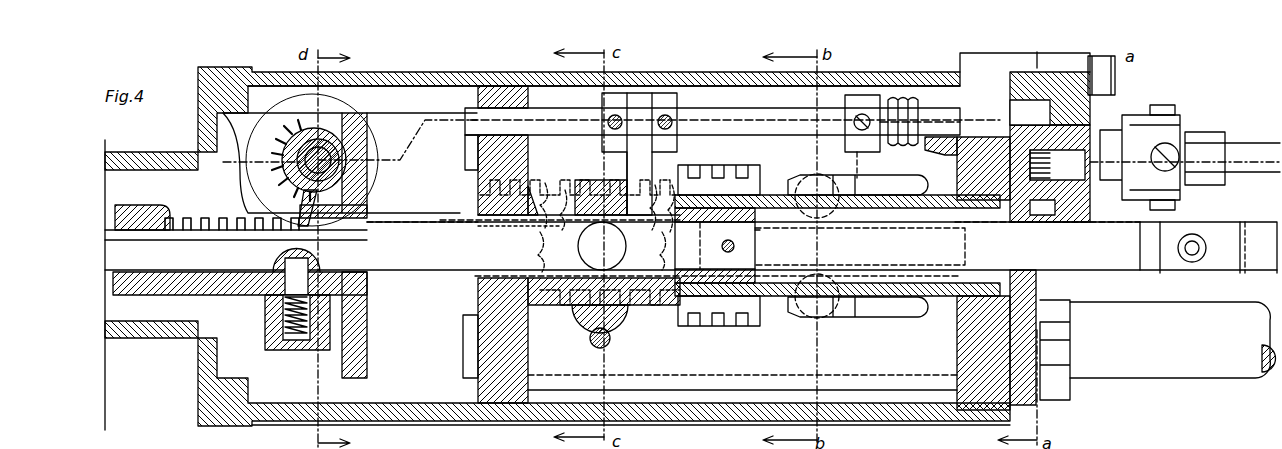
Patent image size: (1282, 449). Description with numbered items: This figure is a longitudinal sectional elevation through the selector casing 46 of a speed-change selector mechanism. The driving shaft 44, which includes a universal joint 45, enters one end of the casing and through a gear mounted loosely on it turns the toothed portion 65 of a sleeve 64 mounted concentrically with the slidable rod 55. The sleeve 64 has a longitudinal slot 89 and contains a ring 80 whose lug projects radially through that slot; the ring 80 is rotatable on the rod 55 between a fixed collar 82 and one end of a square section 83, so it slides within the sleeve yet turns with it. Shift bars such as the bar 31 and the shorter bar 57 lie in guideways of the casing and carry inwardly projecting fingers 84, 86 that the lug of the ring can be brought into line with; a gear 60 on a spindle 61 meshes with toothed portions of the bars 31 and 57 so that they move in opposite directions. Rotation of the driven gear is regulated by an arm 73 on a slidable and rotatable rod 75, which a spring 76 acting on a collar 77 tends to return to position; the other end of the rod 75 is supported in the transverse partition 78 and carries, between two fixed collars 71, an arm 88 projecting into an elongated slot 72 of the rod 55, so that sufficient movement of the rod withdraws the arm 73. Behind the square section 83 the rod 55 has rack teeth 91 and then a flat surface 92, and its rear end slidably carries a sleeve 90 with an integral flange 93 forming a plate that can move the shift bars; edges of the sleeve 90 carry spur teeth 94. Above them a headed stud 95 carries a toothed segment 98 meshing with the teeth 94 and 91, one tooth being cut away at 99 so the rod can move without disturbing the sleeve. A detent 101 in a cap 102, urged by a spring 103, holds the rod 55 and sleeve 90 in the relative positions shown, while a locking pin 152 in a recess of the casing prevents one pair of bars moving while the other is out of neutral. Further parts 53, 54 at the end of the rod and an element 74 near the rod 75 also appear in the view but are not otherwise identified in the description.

The shift bar 31 is at (1236, 370).
The shaft 44 is at (1255, 152).
The universal joint 45 is at (1168, 152).
The selector casing 46 is at (448, 431).
The collar 53 is at (1255, 225).
The pin 54 is at (1194, 246).
The rod 55 is at (425, 260).
The shift bar 57 is at (478, 146).
The gear 60 is at (560, 195).
The spindle 61 is at (627, 246).
The sleeve 64 is at (946, 300).
The toothed portion 65 is at (1042, 215).
The fixed collars 71 is at (685, 150).
The slot 72 is at (422, 182).
The arm 73 is at (1030, 138).
The wedge 74 is at (975, 140).
The rod 75 is at (722, 126).
The spring 76 is at (905, 100).
The collar 77 is at (858, 95).
The transverse partition 78 is at (478, 202).
The ring 80 is at (700, 238).
The fixed collar 82 is at (755, 226).
The square section 83 is at (519, 240).
The finger 84 is at (818, 318).
The finger 86 is at (800, 182).
The arm 88 is at (680, 170).
The slot 89 is at (925, 283).
The sleeve 90 is at (178, 295).
The rack teeth 91 is at (262, 236).
The flat surface 92 is at (148, 235).
The flange 93 is at (367, 338).
The spur teeth 94 is at (188, 210).
The headed stud 95 is at (352, 166).
The toothed segment 98 is at (310, 148).
The cut-away tooth portion 99 is at (303, 224).
The detent 101 is at (308, 262).
The cap 102 is at (315, 350).
The spring 103 is at (286, 350).
The locking pin 152 is at (612, 338).